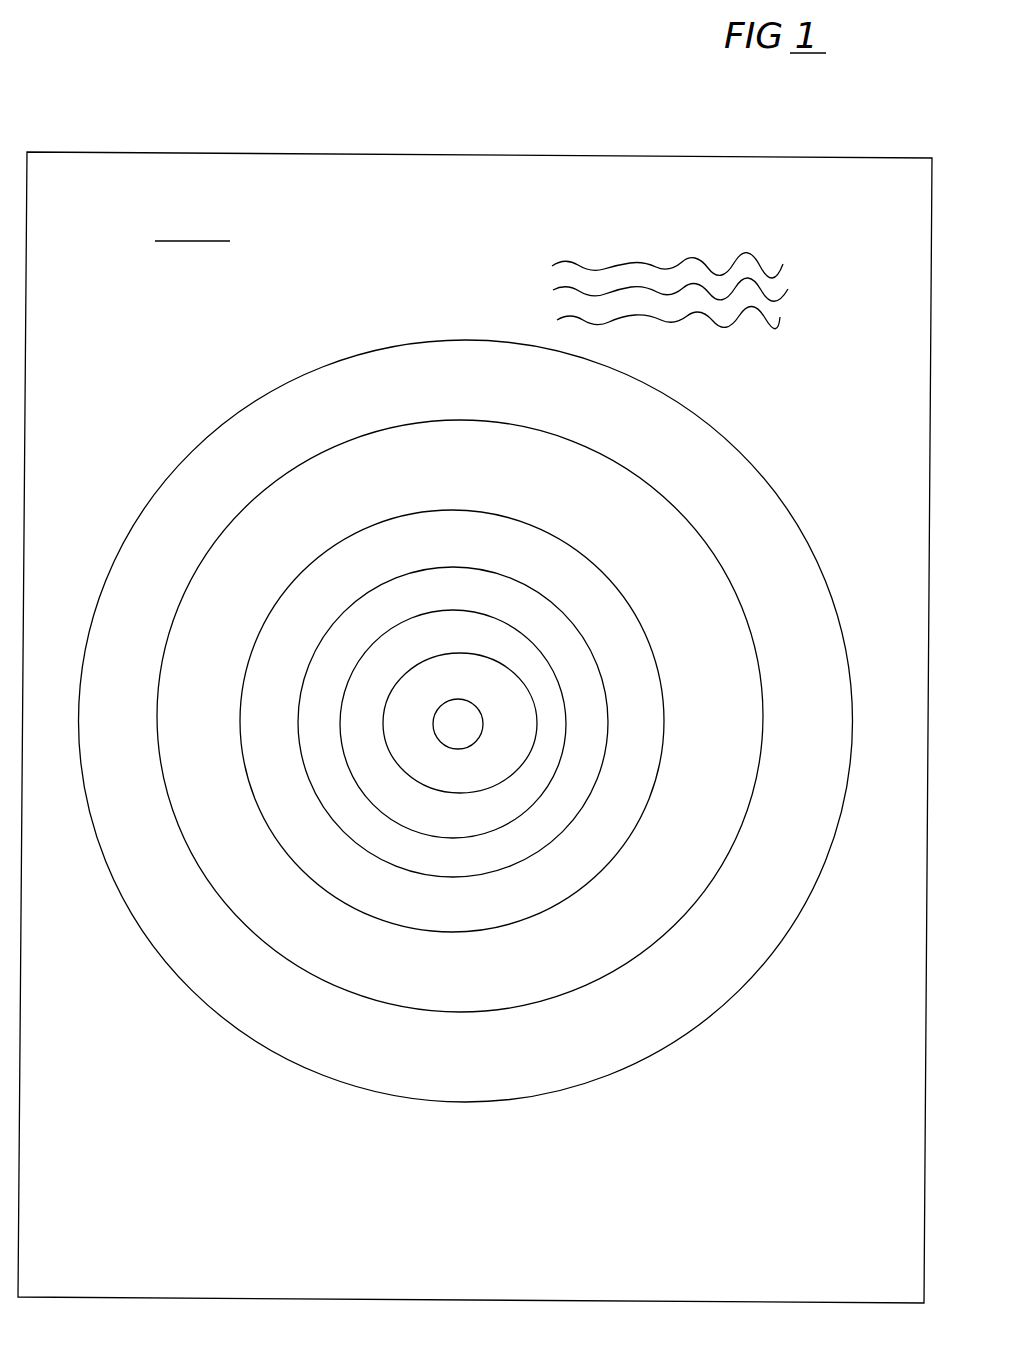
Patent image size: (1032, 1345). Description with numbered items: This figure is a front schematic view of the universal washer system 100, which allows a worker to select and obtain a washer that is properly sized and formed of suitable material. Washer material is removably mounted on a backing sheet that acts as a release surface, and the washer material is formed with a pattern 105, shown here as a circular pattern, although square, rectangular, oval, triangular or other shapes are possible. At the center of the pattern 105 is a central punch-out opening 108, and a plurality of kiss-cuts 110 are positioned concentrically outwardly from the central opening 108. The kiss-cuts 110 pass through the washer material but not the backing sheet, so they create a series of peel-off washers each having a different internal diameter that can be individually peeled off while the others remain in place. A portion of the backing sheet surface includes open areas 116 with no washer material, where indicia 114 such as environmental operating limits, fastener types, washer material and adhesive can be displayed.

The universal washer system 100 is at (400, 127).
The pattern 105 is at (720, 409).
The central punch-out opening 108 is at (482, 680).
The kiss-cuts 110 is at (437, 736).
The indicia 114 is at (805, 277).
The open areas 116 is at (192, 227).